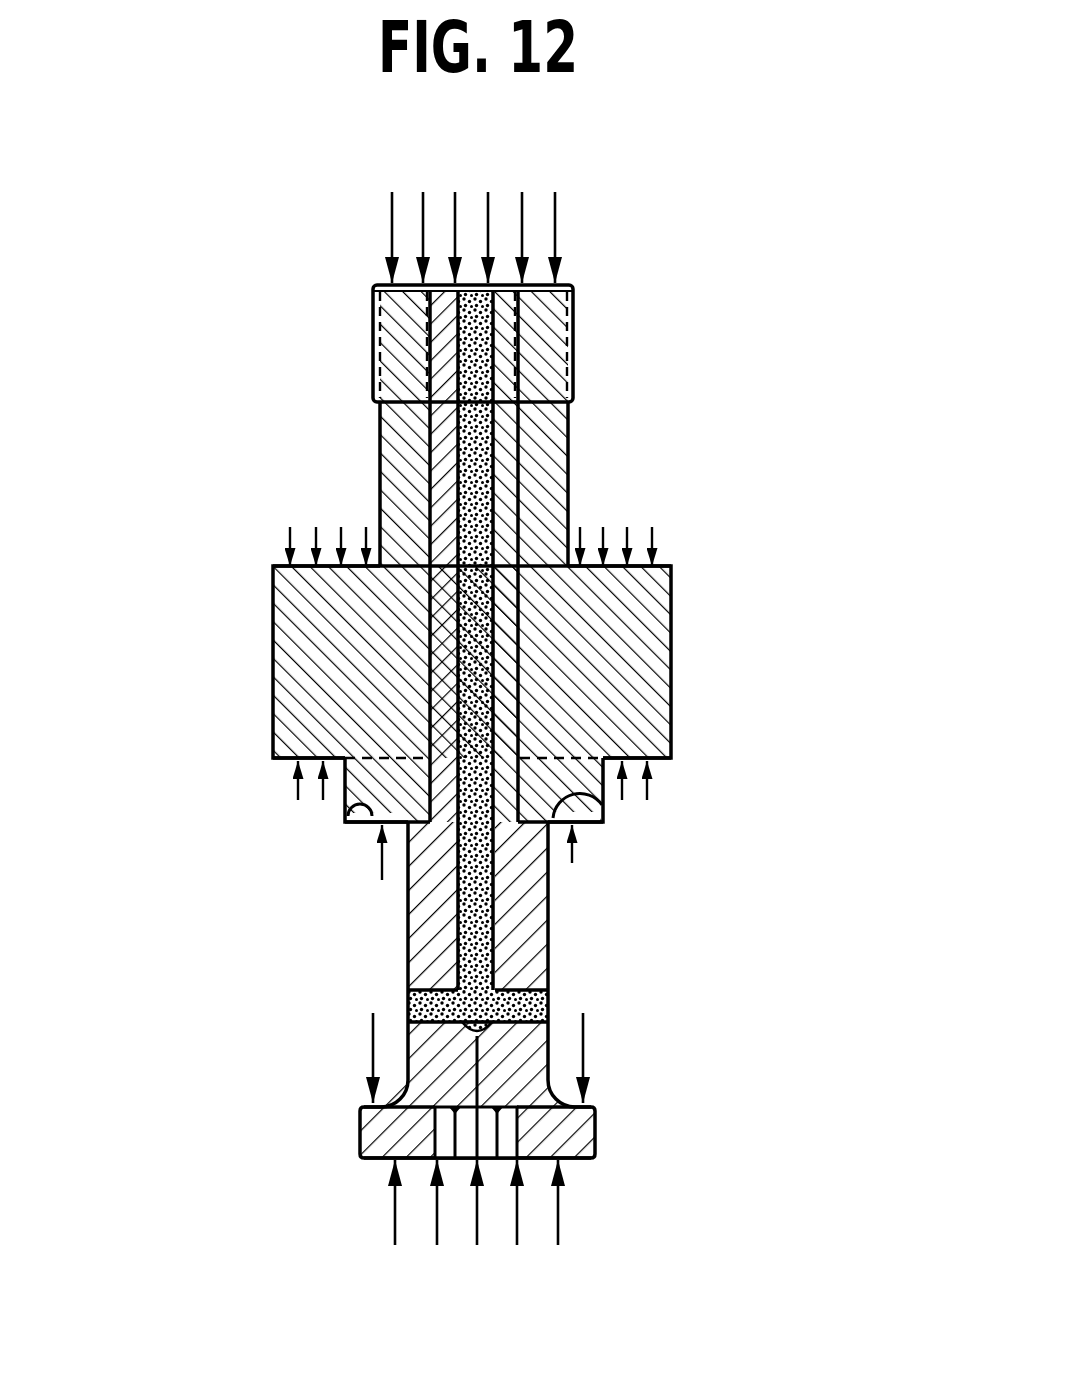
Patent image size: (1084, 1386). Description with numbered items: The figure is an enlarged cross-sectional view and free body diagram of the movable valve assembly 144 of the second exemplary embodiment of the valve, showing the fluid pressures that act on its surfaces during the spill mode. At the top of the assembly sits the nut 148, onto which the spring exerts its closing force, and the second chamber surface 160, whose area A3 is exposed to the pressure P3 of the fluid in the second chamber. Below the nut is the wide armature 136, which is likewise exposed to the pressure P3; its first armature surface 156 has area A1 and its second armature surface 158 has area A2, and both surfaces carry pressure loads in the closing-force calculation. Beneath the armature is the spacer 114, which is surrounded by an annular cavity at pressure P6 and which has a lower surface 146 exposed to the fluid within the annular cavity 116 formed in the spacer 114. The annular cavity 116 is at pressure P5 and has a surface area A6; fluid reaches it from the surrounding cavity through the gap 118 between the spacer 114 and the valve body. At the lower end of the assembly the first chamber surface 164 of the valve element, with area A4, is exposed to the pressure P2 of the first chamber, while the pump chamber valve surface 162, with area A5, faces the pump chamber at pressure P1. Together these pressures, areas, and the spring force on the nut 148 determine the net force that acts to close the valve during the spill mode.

The movable valve assembly 144 is at (642, 198).
The second chamber surface 160 is at (567, 283).
The nut 148 is at (568, 380).
The armature 136 is at (672, 638).
The first armature surface 156 is at (668, 564).
The second armature surface 158 is at (671, 758).
The lower surface 146 is at (652, 768).
The spacer 114 is at (605, 795).
The annular cavity 116 is at (345, 803).
The gap 118 is at (604, 824).
The first chamber surface 164 is at (592, 1107).
The pump chamber valve surface 162 is at (556, 1160).
The pump chamber pressure P1 is at (582, 1257).
The first chamber pressure P2 is at (593, 1057).
The second chamber pressure P3 is at (502, 200).
The annular cavity pressure in spacer P5 is at (383, 862).
The annular cavity pressure surrounding spacer P6 is at (283, 780).